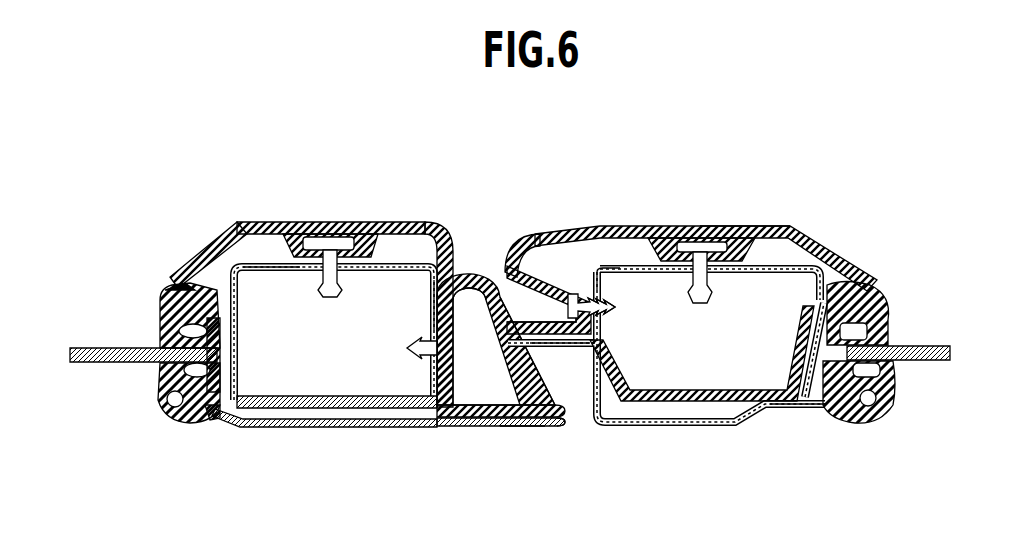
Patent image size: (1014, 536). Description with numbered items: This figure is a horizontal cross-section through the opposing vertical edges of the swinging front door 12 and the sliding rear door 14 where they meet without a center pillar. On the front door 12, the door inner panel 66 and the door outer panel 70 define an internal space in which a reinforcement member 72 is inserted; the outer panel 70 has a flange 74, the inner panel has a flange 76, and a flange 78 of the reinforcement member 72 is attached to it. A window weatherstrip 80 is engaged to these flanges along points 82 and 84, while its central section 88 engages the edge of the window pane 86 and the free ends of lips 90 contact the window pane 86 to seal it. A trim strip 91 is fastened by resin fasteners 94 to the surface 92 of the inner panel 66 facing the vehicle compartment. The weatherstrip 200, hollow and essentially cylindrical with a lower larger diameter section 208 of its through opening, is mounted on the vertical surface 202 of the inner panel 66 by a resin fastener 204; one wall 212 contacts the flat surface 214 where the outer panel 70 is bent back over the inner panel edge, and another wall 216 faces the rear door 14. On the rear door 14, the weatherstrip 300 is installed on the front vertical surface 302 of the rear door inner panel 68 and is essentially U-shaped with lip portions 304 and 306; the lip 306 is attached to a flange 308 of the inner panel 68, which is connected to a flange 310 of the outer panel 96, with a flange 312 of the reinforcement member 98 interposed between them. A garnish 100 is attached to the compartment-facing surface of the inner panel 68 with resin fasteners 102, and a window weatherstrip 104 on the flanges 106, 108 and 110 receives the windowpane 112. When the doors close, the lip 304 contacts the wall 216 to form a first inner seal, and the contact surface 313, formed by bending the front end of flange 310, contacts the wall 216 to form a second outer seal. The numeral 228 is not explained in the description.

The swinging front door 12 is at (252, 212).
The sliding rear door 14 is at (778, 218).
The door inner panel 66 is at (435, 258).
The rear door inner panel 68 is at (658, 236).
The door outer panel 70 is at (397, 428).
The reinforcement member 72 is at (240, 360).
The flange 74 is at (209, 421).
The flange 76 is at (208, 287).
The flange 78 is at (170, 287).
The window weatherstrip 80 is at (162, 300).
The point 82 is at (180, 331).
The point 84 is at (175, 420).
The window pane 86 is at (86, 363).
The central section 88 is at (175, 364).
The lip 90 is at (222, 345).
The trim strip 91 is at (285, 223).
The surface 92 is at (272, 266).
The resin fastener 94 is at (345, 276).
The outer panel 96 is at (676, 427).
The reinforcement member 98 is at (665, 392).
The garnish 100 is at (724, 226).
The resin fastener 102 is at (708, 275).
The window weatherstrip 104 is at (877, 370).
The flange 106 is at (850, 293).
The flange 108 is at (810, 408).
The flange 110 is at (885, 310).
The windowpane 112 is at (935, 347).
The weatherstrip 200 is at (470, 266).
The vertical surface 202 is at (434, 316).
The resin fastener 204 is at (422, 352).
The lower larger diameter section 208 is at (465, 418).
The wall 212 is at (500, 427).
The flat surface 214 is at (532, 427).
The wall 216 is at (540, 380).
The skin end 228 is at (563, 426).
The weatherstrip 300 is at (596, 264).
The front vertical surface 302 is at (600, 285).
The lip portion 304 is at (540, 282).
The lip portion 306 is at (600, 350).
The flange 308 is at (600, 320).
The flange 310 is at (525, 322).
The flange 312 is at (548, 266).
The contact surface 313 is at (480, 328).